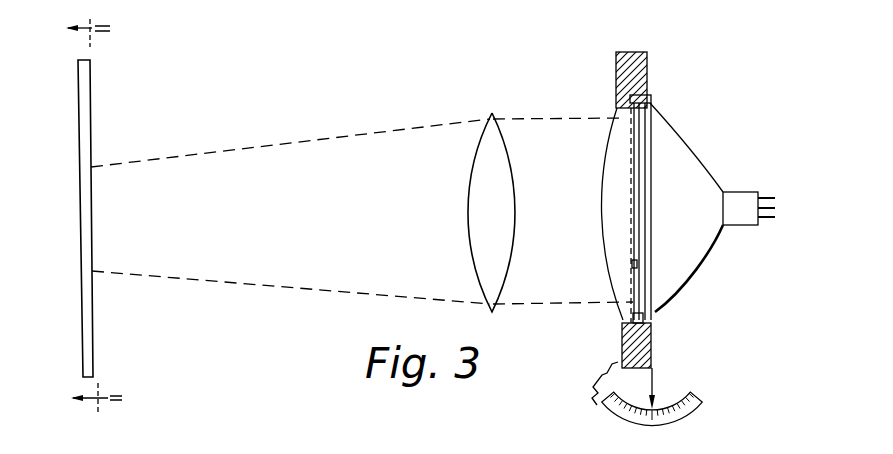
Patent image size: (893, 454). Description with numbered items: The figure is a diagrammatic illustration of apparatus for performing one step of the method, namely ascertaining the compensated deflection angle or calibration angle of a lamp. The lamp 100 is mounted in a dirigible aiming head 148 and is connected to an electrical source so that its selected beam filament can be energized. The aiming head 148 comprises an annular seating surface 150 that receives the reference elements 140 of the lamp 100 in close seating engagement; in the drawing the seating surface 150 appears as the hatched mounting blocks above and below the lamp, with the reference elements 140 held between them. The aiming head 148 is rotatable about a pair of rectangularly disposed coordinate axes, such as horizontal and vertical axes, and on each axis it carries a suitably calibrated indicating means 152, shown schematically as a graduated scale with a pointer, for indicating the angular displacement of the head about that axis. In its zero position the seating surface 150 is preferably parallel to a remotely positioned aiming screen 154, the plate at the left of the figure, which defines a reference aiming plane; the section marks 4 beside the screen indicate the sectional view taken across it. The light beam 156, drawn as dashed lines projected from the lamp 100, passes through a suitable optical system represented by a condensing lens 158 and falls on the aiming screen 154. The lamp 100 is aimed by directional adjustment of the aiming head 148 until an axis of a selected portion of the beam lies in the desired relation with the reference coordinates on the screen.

The section line 4- 4 is at (80, 219).
The lamp 100 is at (677, 127).
The reference elements 140 is at (648, 104).
The dirigible aiming head 148 is at (630, 60).
The annular seating surface 150 is at (633, 318).
The calibrated indicating means 152 is at (694, 386).
The aiming screen 154 is at (93, 332).
The light beam 156 is at (294, 139).
The condensing lens 158 is at (493, 113).